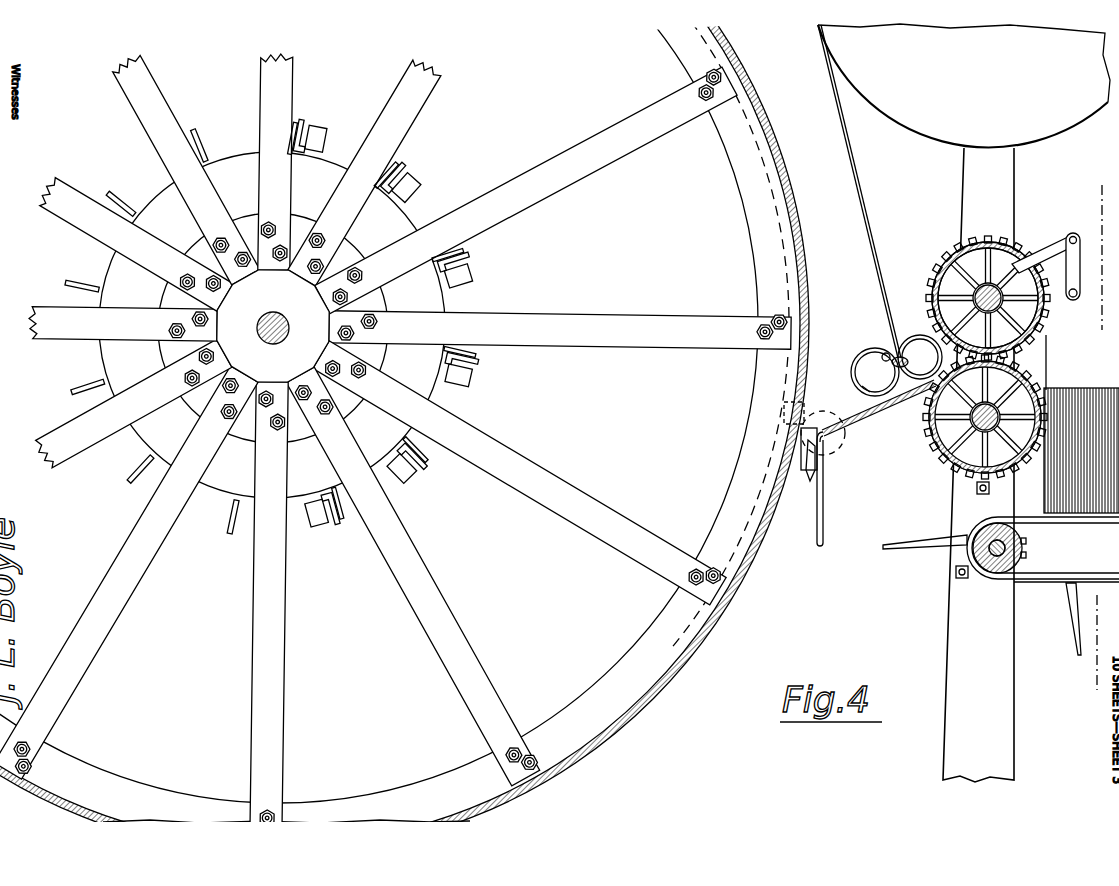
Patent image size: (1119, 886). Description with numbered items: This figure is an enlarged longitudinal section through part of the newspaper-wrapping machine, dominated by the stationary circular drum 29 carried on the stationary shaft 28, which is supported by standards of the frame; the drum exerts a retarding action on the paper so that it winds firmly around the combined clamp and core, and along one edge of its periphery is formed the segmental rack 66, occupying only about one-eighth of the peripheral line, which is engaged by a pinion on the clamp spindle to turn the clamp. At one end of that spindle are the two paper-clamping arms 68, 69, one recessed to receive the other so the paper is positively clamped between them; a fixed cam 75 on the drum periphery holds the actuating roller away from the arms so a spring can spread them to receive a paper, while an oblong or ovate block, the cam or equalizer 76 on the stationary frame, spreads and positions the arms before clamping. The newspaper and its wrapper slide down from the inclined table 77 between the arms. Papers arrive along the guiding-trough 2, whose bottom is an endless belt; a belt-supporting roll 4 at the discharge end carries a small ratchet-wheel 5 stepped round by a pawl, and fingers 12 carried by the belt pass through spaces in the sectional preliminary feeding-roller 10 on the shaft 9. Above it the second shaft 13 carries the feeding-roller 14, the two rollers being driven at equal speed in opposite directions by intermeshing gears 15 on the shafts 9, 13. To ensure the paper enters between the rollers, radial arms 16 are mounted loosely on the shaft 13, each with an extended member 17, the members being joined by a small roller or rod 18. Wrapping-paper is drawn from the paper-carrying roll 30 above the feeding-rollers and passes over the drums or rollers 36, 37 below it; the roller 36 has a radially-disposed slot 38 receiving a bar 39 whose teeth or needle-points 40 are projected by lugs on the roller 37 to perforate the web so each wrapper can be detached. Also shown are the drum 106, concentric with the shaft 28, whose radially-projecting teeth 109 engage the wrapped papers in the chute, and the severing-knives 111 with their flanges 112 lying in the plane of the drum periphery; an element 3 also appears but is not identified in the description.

The guiding-trough 2 is at (1043, 548).
The tube bottom plate 3 is at (1100, 590).
The roll 4 is at (1028, 552).
The ratchet-wheel 5 is at (1093, 439).
The shaft 9 is at (974, 430).
The preliminary feeding-roller 10 is at (990, 488).
The fingers 12 is at (1068, 448).
The second shaft 13 is at (983, 293).
The feeding-roller 14 is at (1048, 312).
The intermeshing gears 15 is at (932, 282).
The radial arms 16 is at (1054, 258).
The extended member 17 is at (1084, 254).
The small roller or rod 18 is at (1085, 299).
The stationary shaft 28 is at (273, 313).
The stationary circular drum 29 is at (758, 212).
The paper-carrying roll 30 is at (964, 85).
The drum or roller 36 is at (862, 388).
The drum or roller 37 is at (901, 355).
The radially-disposed slot 38 is at (884, 352).
The bar 39 is at (875, 372).
The teeth or needle-points 40 is at (920, 357).
The rack 66 is at (786, 247).
The paper-clamping arm 68 is at (805, 433).
The paper-clamping arm 69 is at (838, 447).
The fixed cam 75 is at (769, 566).
The cam or equalizer 76 is at (811, 479).
The inclined table 77 is at (866, 438).
The drum 106 is at (122, 263).
The radially-projecting teeth 109 is at (405, 162).
The severing-knives 111 is at (428, 166).
The flange 112 is at (427, 187).